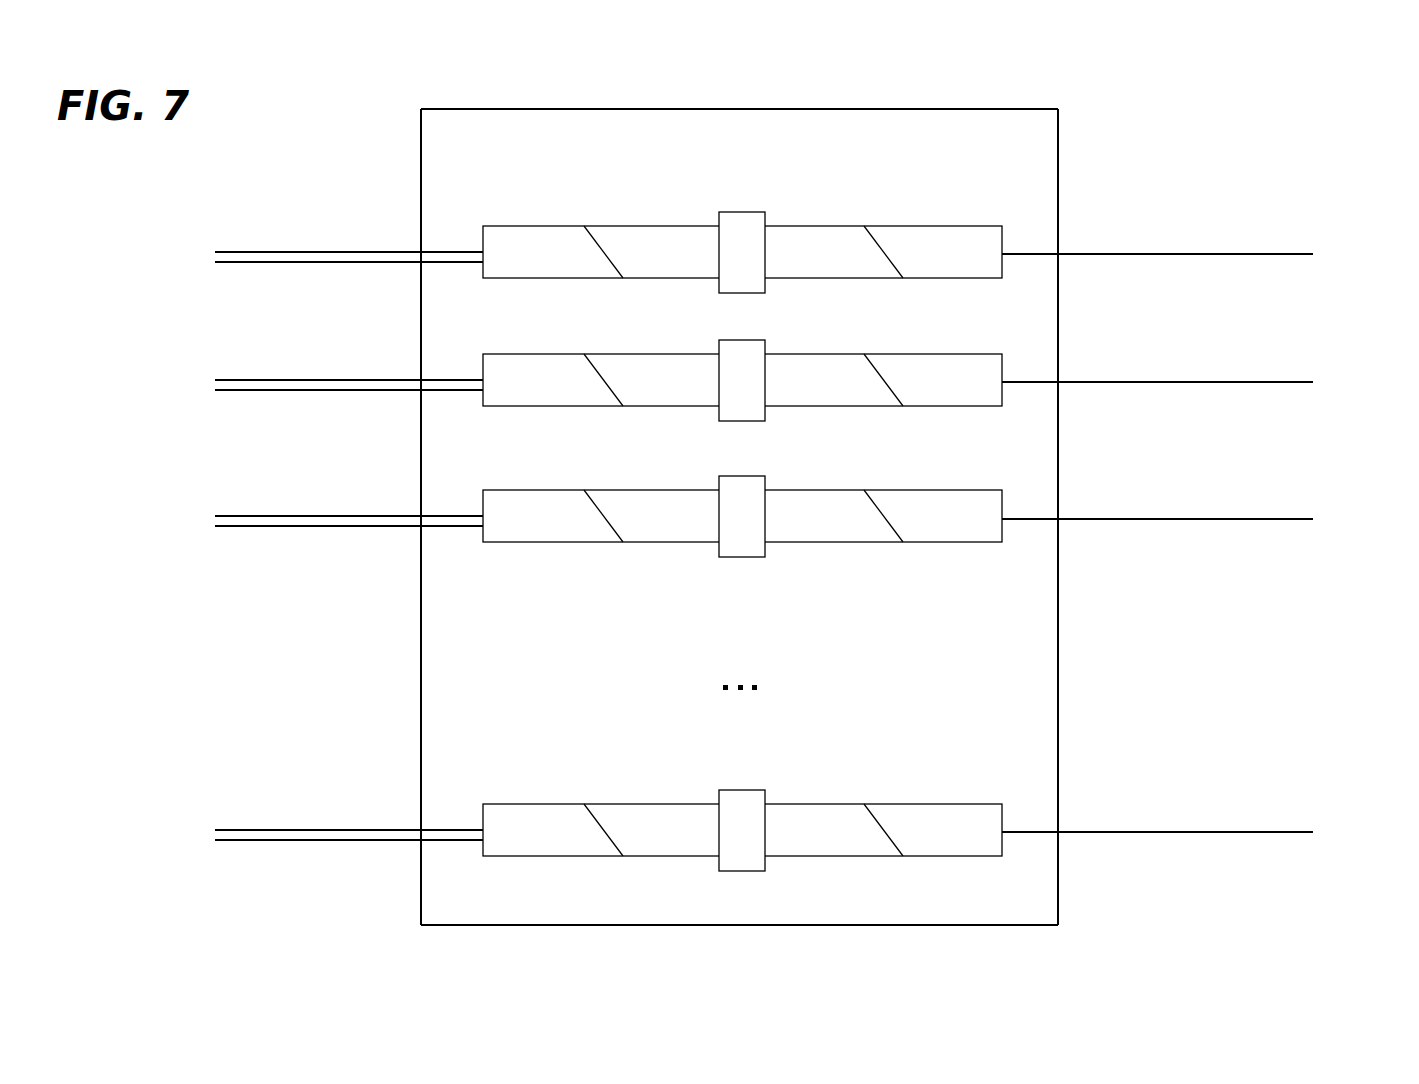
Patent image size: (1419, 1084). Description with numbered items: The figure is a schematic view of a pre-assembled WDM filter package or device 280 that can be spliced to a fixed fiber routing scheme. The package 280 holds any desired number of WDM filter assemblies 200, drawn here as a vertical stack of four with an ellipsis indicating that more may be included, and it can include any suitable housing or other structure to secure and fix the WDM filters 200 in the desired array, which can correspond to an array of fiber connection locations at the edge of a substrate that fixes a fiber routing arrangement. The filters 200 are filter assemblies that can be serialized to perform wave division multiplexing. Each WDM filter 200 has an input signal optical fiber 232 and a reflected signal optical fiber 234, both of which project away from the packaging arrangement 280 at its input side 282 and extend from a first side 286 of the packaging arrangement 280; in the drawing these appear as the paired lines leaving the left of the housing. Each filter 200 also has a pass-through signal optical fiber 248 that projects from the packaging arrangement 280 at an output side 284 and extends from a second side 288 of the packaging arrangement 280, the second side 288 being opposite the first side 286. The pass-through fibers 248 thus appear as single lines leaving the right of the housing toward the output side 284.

The WDM filter assembly 200 is at (906, 208).
The input signal optical fiber 232 is at (290, 248).
The reflected signal optical fiber 234 is at (350, 262).
The pass-through signal optical fiber 248 is at (1153, 253).
The pre-assembled WDM filter package 280 is at (808, 496).
The input side 282 is at (275, 517).
The output side 284 is at (1209, 505).
The first side 286 is at (421, 648).
The second side 288 is at (1058, 617).